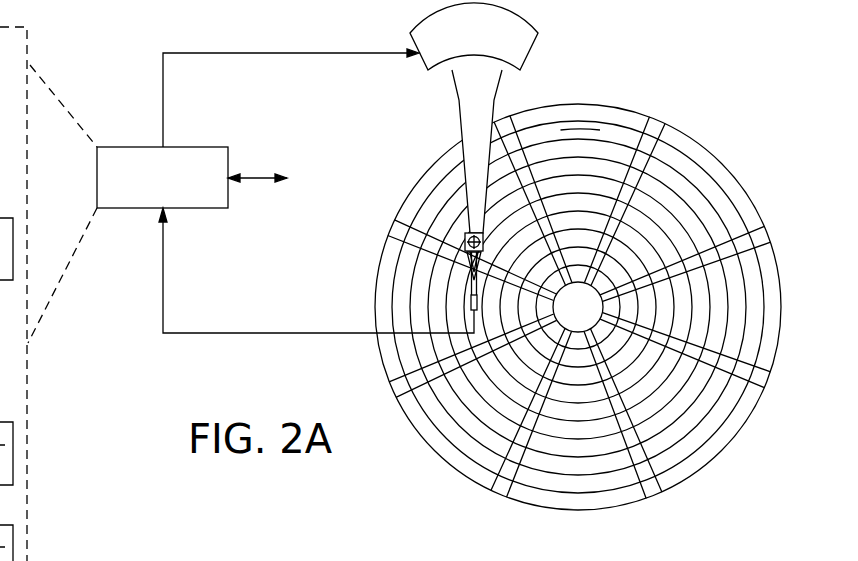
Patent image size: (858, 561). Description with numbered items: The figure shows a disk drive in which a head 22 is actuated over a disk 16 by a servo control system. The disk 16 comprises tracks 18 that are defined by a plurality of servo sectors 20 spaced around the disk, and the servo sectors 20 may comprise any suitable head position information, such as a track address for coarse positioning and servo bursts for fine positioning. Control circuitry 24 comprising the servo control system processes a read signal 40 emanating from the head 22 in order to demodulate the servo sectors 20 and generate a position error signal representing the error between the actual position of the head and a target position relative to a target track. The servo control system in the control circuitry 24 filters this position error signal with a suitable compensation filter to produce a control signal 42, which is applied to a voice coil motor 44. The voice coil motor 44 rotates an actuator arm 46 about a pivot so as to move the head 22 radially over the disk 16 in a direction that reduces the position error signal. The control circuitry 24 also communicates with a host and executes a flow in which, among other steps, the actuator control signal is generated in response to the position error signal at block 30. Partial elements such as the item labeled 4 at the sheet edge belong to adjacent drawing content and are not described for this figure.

The disk 16 is at (720, 148).
The tracks 18 is at (578, 130).
The servo sectors 20 is at (580, 312).
The head 22 is at (460, 299).
The control circuitry 24 is at (197, 147).
The read signal 40 is at (274, 333).
The control signal 42 is at (163, 89).
The voice coil motor 44 is at (426, 67).
The actuator arm 46 is at (458, 132).
The block 30 is at (7, 262).
The adjacent figure element (partial) 4 is at (6, 491).